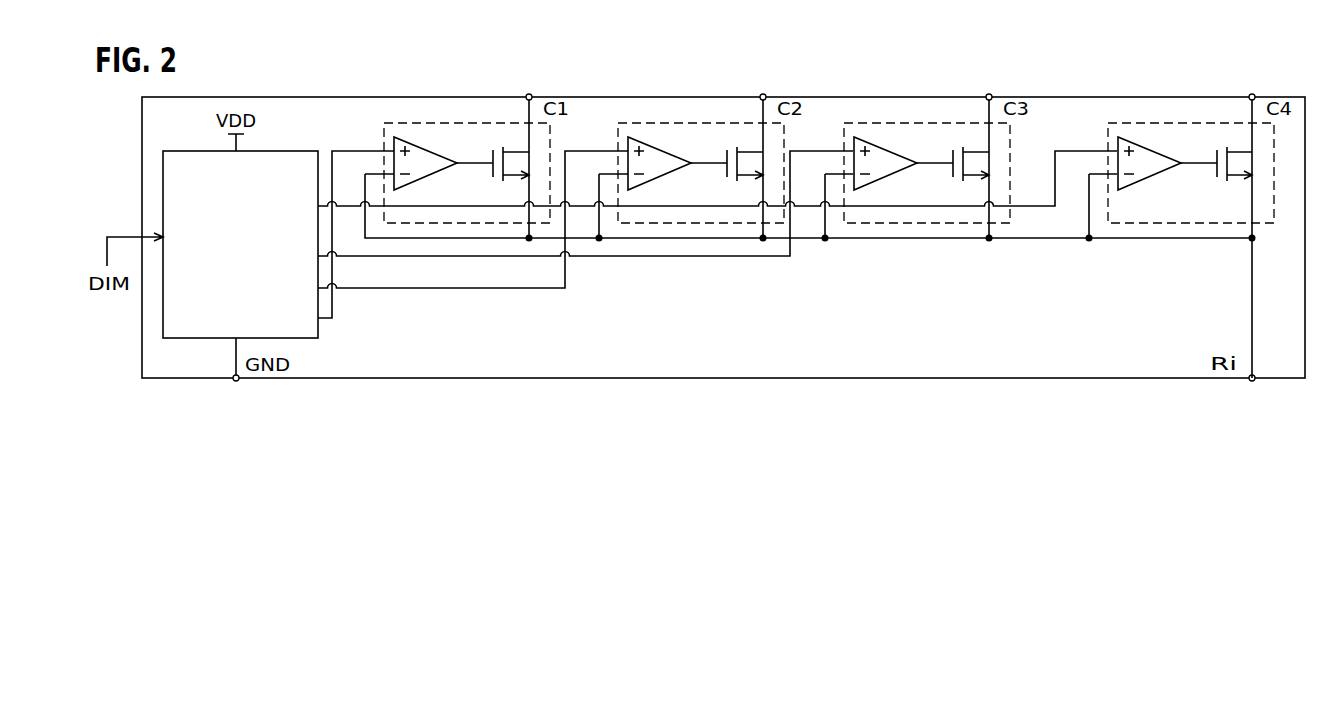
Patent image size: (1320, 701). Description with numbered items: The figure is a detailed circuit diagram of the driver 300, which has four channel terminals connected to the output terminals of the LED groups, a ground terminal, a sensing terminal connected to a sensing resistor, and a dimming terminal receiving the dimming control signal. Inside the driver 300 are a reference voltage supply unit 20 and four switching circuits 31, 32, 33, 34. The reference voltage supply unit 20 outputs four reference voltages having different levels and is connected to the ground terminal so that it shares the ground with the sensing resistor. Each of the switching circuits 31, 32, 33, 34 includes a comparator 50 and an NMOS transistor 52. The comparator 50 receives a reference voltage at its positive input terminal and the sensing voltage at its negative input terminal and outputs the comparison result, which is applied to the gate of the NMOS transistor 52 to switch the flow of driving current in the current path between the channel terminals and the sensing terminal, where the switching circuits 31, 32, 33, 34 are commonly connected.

The reference voltage supply unit 20 is at (291, 150).
The switching circuit 31 is at (412, 124).
The switching circuit 32 is at (646, 124).
The switching circuit 33 is at (872, 124).
The switching circuit 34 is at (1136, 124).
The comparator 50 is at (432, 174).
The NMOS transistor 52 is at (488, 175).
The driver 300 is at (385, 378).